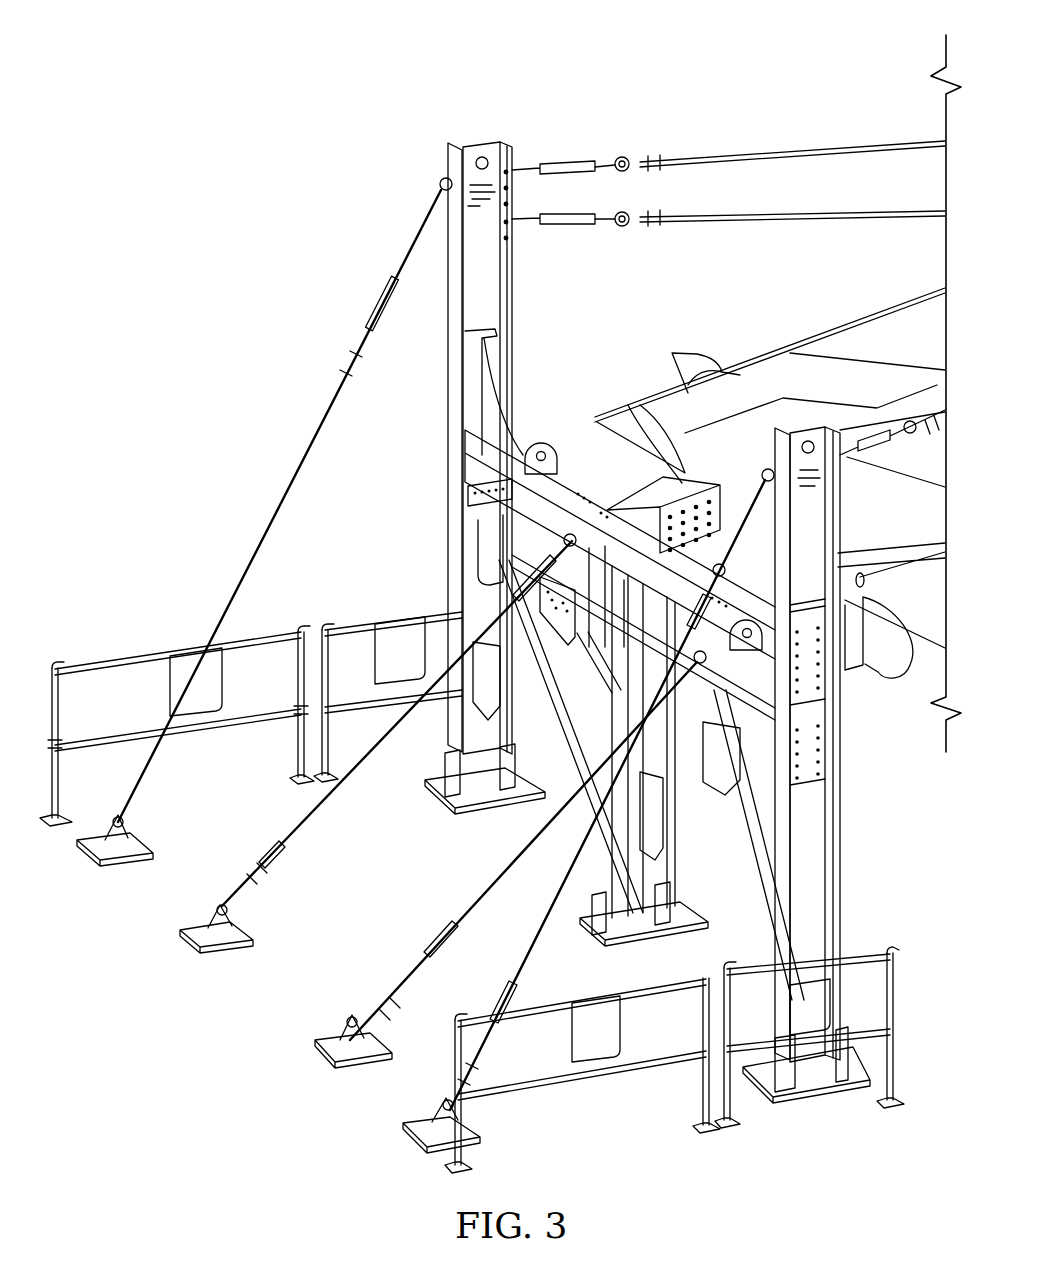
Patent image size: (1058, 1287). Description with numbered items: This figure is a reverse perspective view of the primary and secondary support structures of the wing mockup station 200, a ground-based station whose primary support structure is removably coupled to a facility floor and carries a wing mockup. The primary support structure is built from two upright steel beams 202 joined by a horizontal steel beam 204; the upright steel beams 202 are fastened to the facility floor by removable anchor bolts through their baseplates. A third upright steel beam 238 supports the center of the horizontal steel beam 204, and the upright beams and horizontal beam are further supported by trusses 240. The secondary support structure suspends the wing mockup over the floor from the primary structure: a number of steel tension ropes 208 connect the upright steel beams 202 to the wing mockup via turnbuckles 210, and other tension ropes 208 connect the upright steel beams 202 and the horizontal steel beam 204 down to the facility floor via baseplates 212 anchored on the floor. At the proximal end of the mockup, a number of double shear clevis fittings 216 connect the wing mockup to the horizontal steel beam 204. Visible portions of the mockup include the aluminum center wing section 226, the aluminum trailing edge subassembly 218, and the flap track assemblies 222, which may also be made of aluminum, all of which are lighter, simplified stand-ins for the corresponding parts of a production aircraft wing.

The wing mockup station 200 is at (283, 62).
The upright steel beams 202 is at (480, 143).
The horizontal steel beam 204 is at (492, 518).
The steel tension ropes 208 is at (285, 500).
The turnbuckles 210 is at (368, 322).
The baseplates 212 is at (212, 914).
The double shear clevis fittings 216 is at (665, 487).
The trailing edge subassembly 218 is at (785, 370).
The flap track assemblies 222 is at (676, 349).
The center wing section 226 is at (906, 534).
The third upright steel beam 238 is at (610, 858).
The trusses 240 is at (545, 652).